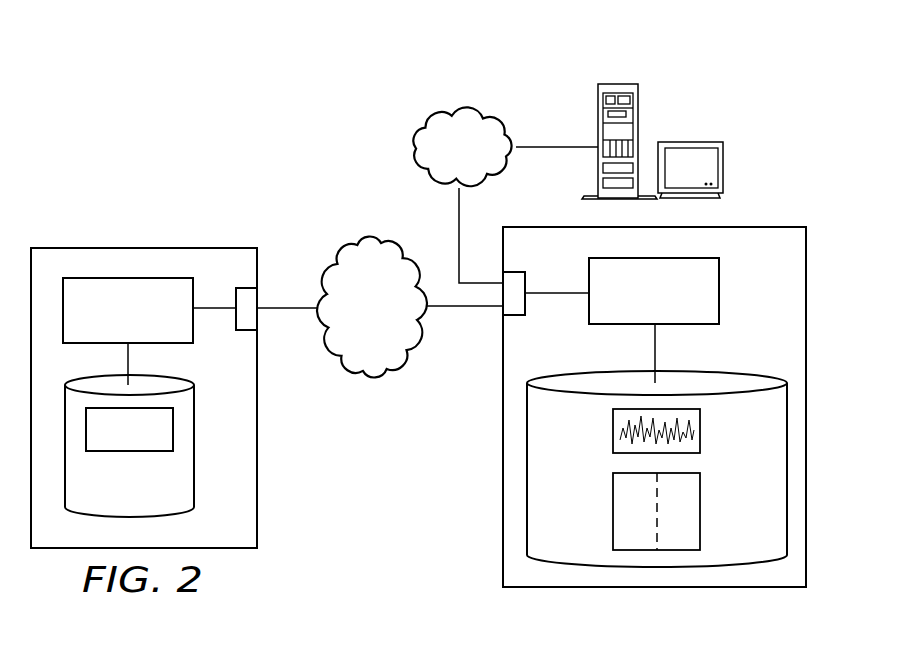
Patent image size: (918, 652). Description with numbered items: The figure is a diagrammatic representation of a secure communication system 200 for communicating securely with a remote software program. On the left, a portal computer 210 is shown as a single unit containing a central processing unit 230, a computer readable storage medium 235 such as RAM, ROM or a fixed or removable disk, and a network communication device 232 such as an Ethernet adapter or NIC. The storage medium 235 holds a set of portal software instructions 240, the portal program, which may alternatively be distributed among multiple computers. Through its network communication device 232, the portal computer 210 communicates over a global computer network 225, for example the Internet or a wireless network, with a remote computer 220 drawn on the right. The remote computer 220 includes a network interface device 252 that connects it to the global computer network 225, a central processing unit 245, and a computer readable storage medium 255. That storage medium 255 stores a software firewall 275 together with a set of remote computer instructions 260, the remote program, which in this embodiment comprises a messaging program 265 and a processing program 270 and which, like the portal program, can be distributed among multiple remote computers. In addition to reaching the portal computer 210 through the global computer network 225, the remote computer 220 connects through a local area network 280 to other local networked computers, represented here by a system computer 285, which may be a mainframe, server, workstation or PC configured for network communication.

The secure communication system 200 is at (266, 142).
The portal computer 210 is at (140, 238).
The remote computer 220 is at (762, 215).
The global computer network 225 is at (391, 320).
The central processing unit 230 is at (147, 324).
The network communication device 232 is at (243, 332).
The computer readable storage medium 235 is at (148, 496).
The portal software instructions 240 is at (148, 441).
The central processing unit 245 is at (674, 303).
The network interface device 252 is at (518, 318).
The computer readable storage medium 255 is at (746, 366).
The remote computer instructions 260 is at (712, 477).
The messaging program 265 is at (612, 514).
The processing program 270 is at (700, 512).
The software firewall 275 is at (612, 434).
The local area network 280 is at (481, 161).
The system computer 285 is at (675, 108).